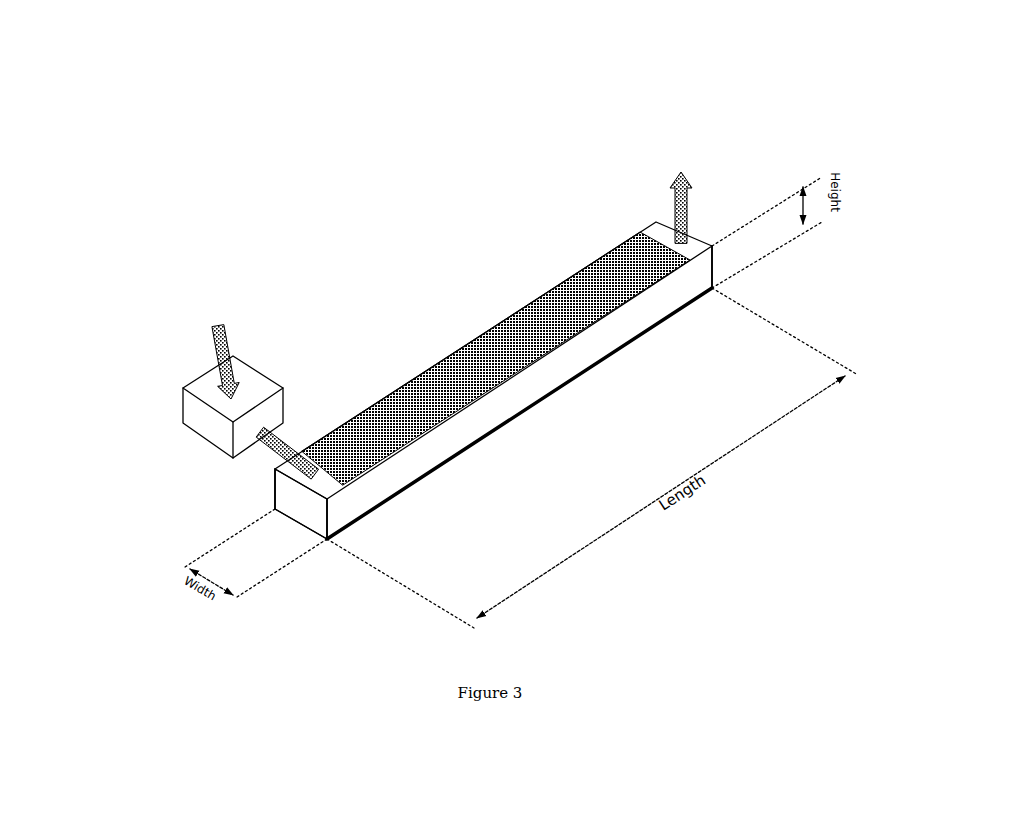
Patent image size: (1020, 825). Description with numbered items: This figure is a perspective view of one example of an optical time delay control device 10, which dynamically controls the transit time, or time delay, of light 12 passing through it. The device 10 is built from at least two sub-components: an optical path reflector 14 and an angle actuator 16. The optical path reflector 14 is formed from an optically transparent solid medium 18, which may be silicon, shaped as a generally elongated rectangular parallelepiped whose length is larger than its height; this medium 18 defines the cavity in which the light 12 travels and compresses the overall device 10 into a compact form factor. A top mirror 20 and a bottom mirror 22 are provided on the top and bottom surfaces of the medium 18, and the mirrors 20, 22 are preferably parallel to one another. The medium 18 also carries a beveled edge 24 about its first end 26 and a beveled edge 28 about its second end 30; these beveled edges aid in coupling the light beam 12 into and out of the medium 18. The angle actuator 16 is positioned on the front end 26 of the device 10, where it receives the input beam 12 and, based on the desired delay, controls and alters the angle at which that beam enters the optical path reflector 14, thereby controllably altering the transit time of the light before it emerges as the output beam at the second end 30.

The optical time delay control device 10 is at (488, 420).
The light 12 is at (231, 346).
The optical path reflector 14 is at (487, 420).
The angle actuator 16 is at (197, 414).
The optically transparent solid medium 18 is at (599, 350).
The top mirror 20 is at (510, 312).
The bottom mirror 22 is at (519, 415).
The beveled edge 24 is at (318, 533).
The first end 26 is at (275, 488).
The beveled edge 28 is at (666, 223).
The second end 30 is at (713, 289).